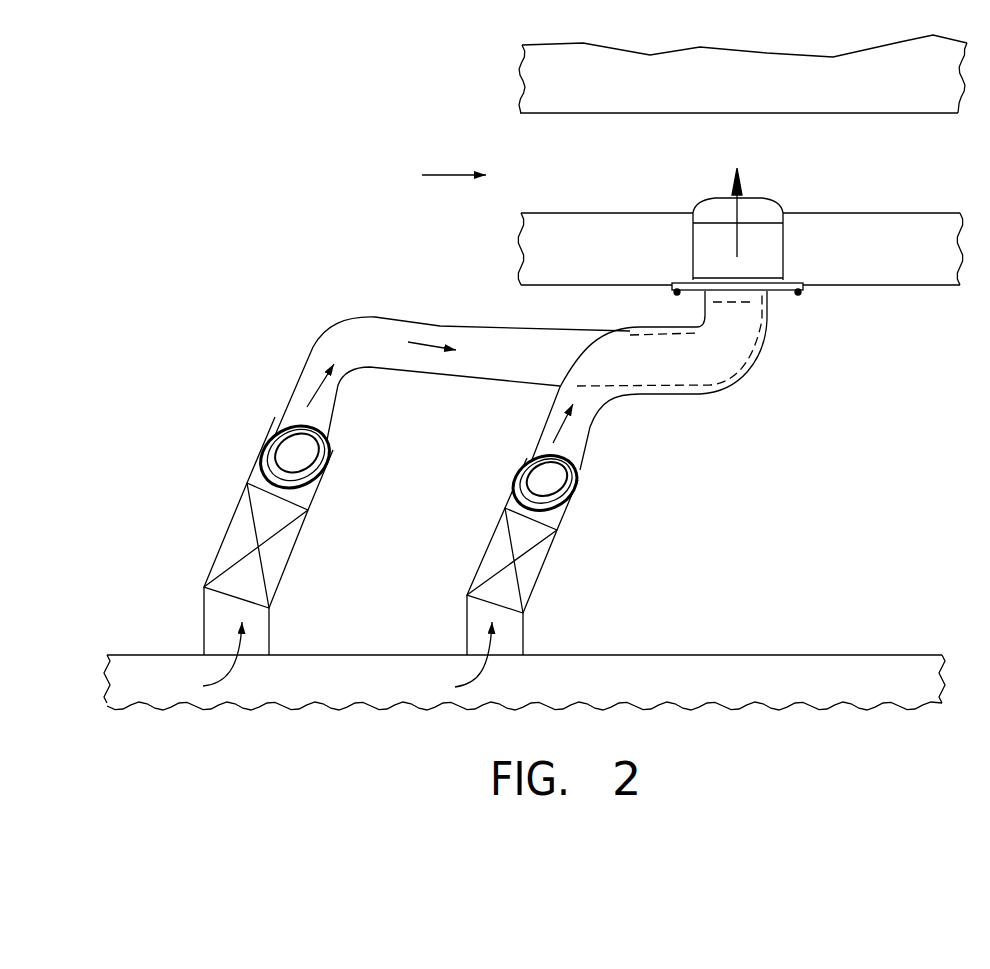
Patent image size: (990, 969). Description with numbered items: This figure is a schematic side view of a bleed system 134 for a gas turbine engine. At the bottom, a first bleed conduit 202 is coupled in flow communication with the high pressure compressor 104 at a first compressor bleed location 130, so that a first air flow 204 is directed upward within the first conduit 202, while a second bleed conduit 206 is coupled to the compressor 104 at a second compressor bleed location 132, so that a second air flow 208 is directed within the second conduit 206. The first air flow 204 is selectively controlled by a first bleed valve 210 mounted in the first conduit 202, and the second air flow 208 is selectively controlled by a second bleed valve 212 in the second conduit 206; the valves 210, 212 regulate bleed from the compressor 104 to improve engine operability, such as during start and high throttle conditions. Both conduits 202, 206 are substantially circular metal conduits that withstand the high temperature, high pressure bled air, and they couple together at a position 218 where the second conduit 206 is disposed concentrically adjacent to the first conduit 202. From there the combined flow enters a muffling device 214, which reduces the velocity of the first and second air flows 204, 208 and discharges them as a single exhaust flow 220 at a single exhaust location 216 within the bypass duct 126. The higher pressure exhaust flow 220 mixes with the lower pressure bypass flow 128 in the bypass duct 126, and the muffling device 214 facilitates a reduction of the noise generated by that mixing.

The high pressure compressor 104 is at (820, 654).
The bypass duct 126 is at (880, 179).
The bypass flow 128 is at (447, 174).
The first compressor bleed location 130 is at (204, 652).
The second compressor bleed location 132 is at (525, 637).
The bleed system 134 is at (235, 246).
The first bleed conduit 202 is at (318, 342).
The first air flow 204 is at (235, 682).
The second bleed conduit 206 is at (587, 440).
The second air flow 208 is at (486, 682).
The first bleed valve 210 is at (236, 532).
The second bleed valve 212 is at (540, 555).
The muffling device 214 is at (690, 264).
The single exhaust location 216 is at (693, 212).
The coupling position 218 is at (777, 330).
The exhaust flow 220 is at (739, 252).